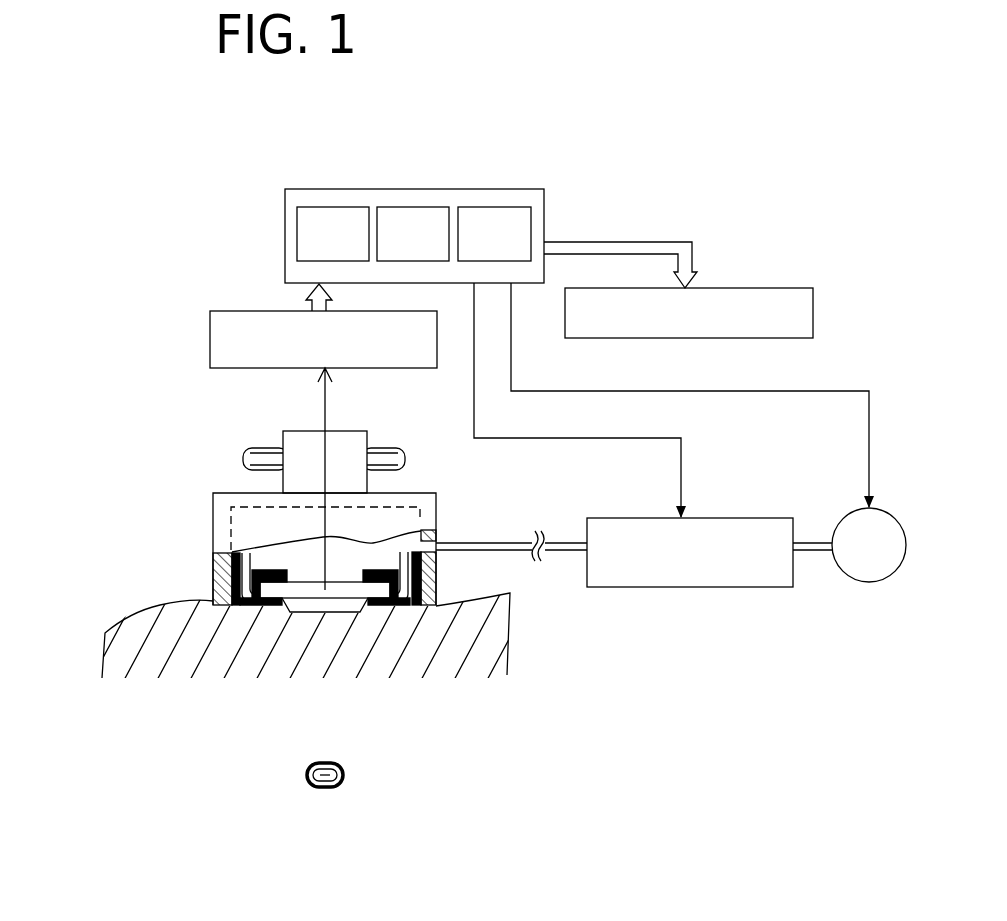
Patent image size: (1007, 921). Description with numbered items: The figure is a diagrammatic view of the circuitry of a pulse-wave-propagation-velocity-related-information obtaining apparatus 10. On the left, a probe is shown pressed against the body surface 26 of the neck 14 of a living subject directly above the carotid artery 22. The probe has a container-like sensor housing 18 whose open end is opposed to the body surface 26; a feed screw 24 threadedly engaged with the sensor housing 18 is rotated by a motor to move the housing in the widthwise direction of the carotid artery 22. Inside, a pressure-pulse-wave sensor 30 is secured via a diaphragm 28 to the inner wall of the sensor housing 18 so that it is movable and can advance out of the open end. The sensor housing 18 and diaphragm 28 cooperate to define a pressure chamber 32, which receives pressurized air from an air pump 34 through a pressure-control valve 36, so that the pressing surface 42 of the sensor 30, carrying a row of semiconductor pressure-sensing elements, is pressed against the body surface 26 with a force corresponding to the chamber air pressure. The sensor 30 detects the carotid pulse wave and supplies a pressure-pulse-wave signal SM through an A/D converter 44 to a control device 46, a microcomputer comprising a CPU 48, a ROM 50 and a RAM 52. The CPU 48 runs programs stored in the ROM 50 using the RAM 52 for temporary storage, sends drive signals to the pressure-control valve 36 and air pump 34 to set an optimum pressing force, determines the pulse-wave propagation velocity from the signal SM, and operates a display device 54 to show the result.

The pulse-wave-propagation-velocity-related-information obtaining apparatus 10 is at (513, 108).
The neck 14 is at (97, 643).
The sensor housing 18 is at (212, 582).
The carotid artery 22 is at (328, 788).
The feed screw 24 is at (393, 455).
The body surface 26 is at (138, 610).
The diaphragm 28 is at (237, 608).
The pressure-pulse-wave sensor 30 is at (288, 618).
The pressure chamber 32 is at (356, 566).
The air pump 34 is at (867, 574).
The pressure-control valve 36 is at (702, 580).
The pressing surface 42 is at (348, 615).
The A/D converter 44 is at (218, 343).
The control device 46 is at (267, 239).
The central processing unit (CPU) 48 is at (305, 226).
The read only memory (ROM) 50 is at (422, 213).
The random access memory (RAM) 52 is at (523, 212).
The display device 54 is at (808, 317).